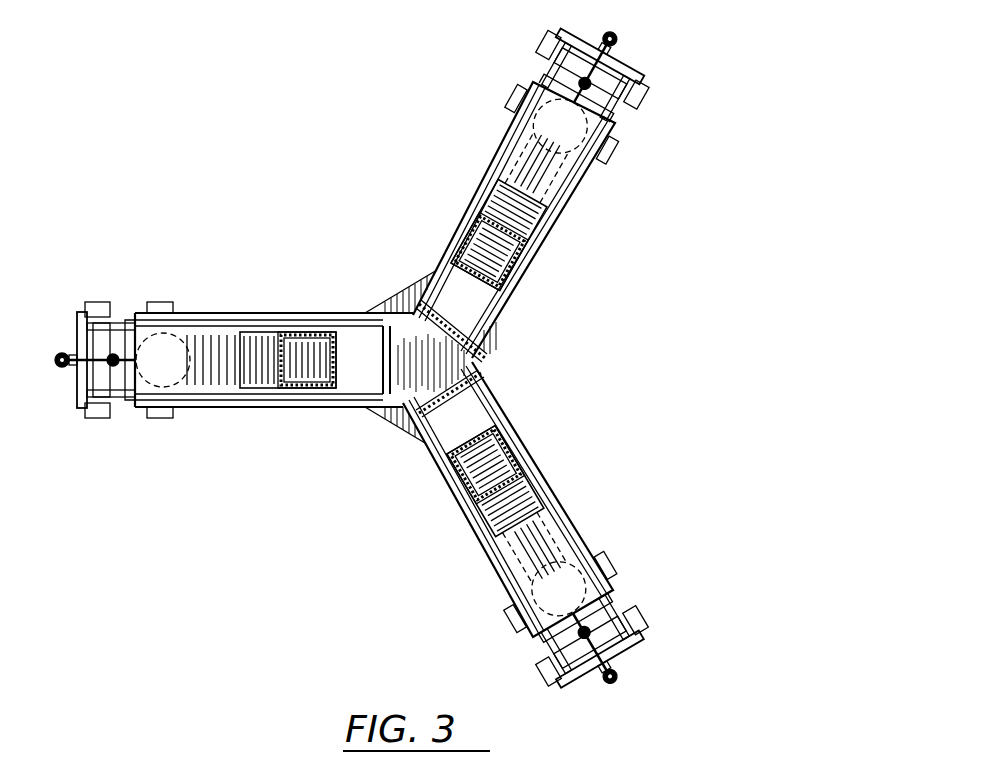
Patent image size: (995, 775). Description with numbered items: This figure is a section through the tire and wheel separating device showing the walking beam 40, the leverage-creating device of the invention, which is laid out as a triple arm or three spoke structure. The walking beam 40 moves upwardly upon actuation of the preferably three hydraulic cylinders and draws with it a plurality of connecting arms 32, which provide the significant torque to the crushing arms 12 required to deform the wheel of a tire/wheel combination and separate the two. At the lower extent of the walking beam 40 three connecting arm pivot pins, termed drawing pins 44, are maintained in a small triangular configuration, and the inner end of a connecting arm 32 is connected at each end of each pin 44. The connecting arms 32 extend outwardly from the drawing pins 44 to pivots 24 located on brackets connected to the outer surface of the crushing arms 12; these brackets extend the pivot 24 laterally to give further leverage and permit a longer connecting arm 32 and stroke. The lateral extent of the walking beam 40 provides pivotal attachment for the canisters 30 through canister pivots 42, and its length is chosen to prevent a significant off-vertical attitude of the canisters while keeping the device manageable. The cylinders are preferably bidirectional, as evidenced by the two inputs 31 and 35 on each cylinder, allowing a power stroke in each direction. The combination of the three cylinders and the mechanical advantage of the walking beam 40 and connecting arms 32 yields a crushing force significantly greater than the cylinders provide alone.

The crushing arm 12 is at (318, 392).
The connecting arm pivot 24 is at (627, 630).
The canister 30 is at (613, 662).
The cylinder input 31 is at (120, 326).
The connecting arm 32 is at (617, 605).
The cylinder input 35 is at (60, 355).
The walking beam 40 is at (540, 483).
The canister pivot 42 is at (607, 563).
The drawing pin 44 is at (386, 357).